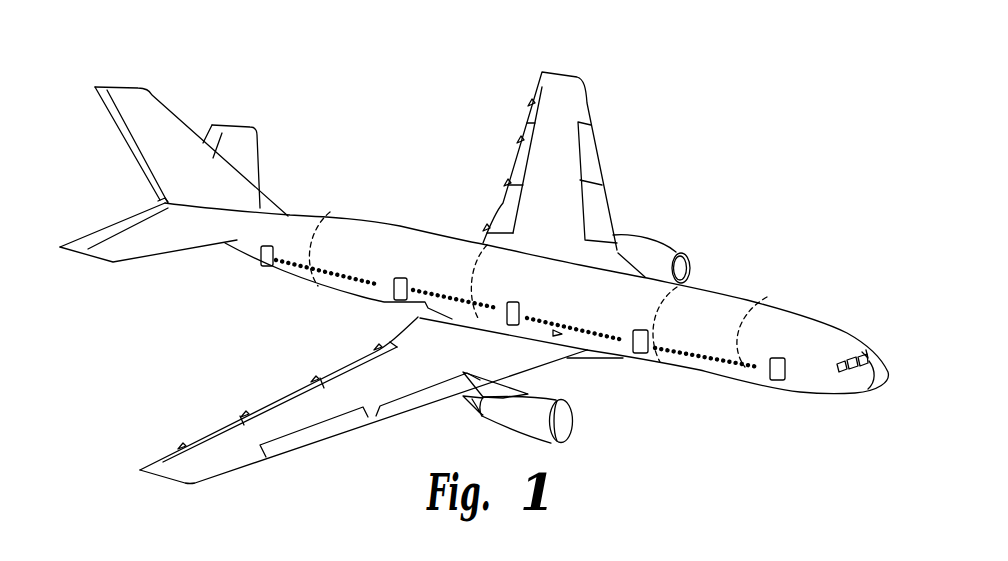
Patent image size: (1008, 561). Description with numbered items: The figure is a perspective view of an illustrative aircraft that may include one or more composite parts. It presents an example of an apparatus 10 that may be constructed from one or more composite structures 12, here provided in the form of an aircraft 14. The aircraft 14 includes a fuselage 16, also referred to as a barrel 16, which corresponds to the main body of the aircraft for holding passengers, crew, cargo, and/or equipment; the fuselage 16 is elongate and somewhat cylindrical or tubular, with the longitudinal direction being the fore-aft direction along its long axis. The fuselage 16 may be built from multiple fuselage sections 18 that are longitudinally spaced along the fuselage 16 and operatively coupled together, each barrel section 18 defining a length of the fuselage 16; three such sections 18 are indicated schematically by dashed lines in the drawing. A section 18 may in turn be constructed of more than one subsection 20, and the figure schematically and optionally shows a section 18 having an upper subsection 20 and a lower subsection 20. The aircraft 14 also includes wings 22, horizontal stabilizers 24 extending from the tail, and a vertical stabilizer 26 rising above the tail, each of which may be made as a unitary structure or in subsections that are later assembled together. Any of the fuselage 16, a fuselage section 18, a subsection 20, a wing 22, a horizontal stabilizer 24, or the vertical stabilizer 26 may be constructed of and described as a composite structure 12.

The apparatus 10 is at (816, 203).
The composite structure 12 is at (421, 121).
The aircraft 14 is at (762, 155).
The fuselage 16 is at (652, 266).
The fuselage section 18 is at (340, 296).
The subsection 20 is at (766, 297).
The wing 22 is at (590, 103).
The horizontal stabilizer 24 is at (258, 163).
The vertical stabilizer 26 is at (172, 113).